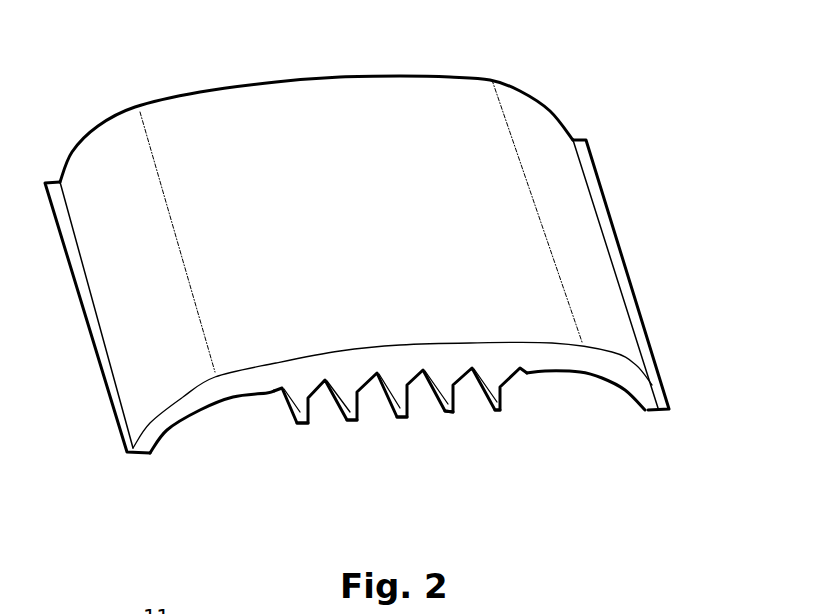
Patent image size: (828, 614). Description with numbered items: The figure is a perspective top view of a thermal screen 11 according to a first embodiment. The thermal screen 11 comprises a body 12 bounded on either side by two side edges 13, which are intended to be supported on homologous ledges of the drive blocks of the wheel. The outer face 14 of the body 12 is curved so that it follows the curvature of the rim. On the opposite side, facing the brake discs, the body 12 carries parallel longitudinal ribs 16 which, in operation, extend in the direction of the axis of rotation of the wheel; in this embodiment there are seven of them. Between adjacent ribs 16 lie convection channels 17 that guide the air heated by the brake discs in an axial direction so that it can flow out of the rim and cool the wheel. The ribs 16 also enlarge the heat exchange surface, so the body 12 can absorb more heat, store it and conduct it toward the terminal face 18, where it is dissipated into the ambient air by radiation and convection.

The thermal screen 11 is at (159, 80).
The body 12 is at (258, 103).
The side edges 13 is at (110, 395).
The outer face 14 is at (361, 226).
The longitudinal ribs 16 is at (297, 427).
The convection channels 17 is at (322, 409).
The terminal face 18 is at (397, 433).